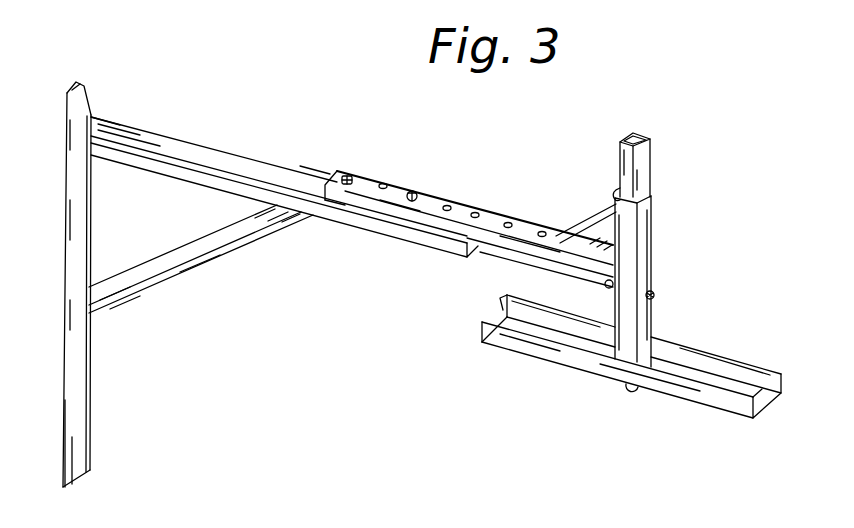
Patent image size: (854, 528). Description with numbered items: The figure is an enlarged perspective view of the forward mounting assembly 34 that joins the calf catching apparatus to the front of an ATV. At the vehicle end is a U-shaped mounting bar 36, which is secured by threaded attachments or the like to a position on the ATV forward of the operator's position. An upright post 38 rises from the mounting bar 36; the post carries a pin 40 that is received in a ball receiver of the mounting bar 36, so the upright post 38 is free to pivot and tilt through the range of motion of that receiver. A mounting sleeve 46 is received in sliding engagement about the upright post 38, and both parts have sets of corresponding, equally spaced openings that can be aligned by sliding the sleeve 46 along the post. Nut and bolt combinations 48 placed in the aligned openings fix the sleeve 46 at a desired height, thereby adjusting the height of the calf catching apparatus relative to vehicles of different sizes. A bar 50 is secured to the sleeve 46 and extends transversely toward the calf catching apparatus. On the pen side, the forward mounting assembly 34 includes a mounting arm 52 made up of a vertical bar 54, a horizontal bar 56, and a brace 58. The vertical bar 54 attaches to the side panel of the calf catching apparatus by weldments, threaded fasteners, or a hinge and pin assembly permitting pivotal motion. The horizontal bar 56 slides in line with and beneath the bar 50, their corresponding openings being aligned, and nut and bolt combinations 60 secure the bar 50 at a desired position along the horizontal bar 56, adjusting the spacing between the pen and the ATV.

The forward mounting assembly 34 is at (355, 325).
The U-shaped mounting bar 36 is at (707, 393).
The upright post 38 is at (643, 163).
The pin 40 is at (632, 388).
The mounting sleeve 46 is at (645, 226).
The nut and bolt combinations 48 is at (654, 294).
The bar 50 is at (498, 217).
The mounting arm 52 is at (120, 115).
The vertical bar 54 is at (82, 222).
The horizontal bar 56 is at (217, 157).
The brace 58 is at (168, 270).
The nut and bolt combinations 60 is at (352, 172).